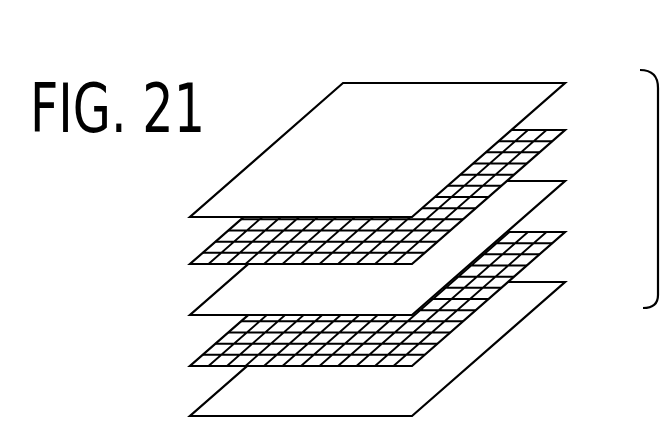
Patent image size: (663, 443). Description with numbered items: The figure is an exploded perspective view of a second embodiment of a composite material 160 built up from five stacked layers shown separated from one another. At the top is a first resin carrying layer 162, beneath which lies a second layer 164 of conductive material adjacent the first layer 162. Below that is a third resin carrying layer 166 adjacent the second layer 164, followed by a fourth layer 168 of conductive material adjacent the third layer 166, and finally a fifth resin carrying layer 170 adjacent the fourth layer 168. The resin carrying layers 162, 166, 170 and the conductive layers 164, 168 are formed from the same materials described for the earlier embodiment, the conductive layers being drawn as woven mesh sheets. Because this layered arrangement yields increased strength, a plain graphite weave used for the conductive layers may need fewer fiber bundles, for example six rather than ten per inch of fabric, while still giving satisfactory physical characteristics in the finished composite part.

The composite material 160 is at (543, 355).
The first resin carrying layer 162 is at (483, 82).
The second layer of conductive material 164 is at (553, 128).
The third resin carrying layer 166 is at (548, 183).
The fourth layer of conductive material 168 is at (548, 233).
The fifth resin carrying layer 170 is at (548, 280).